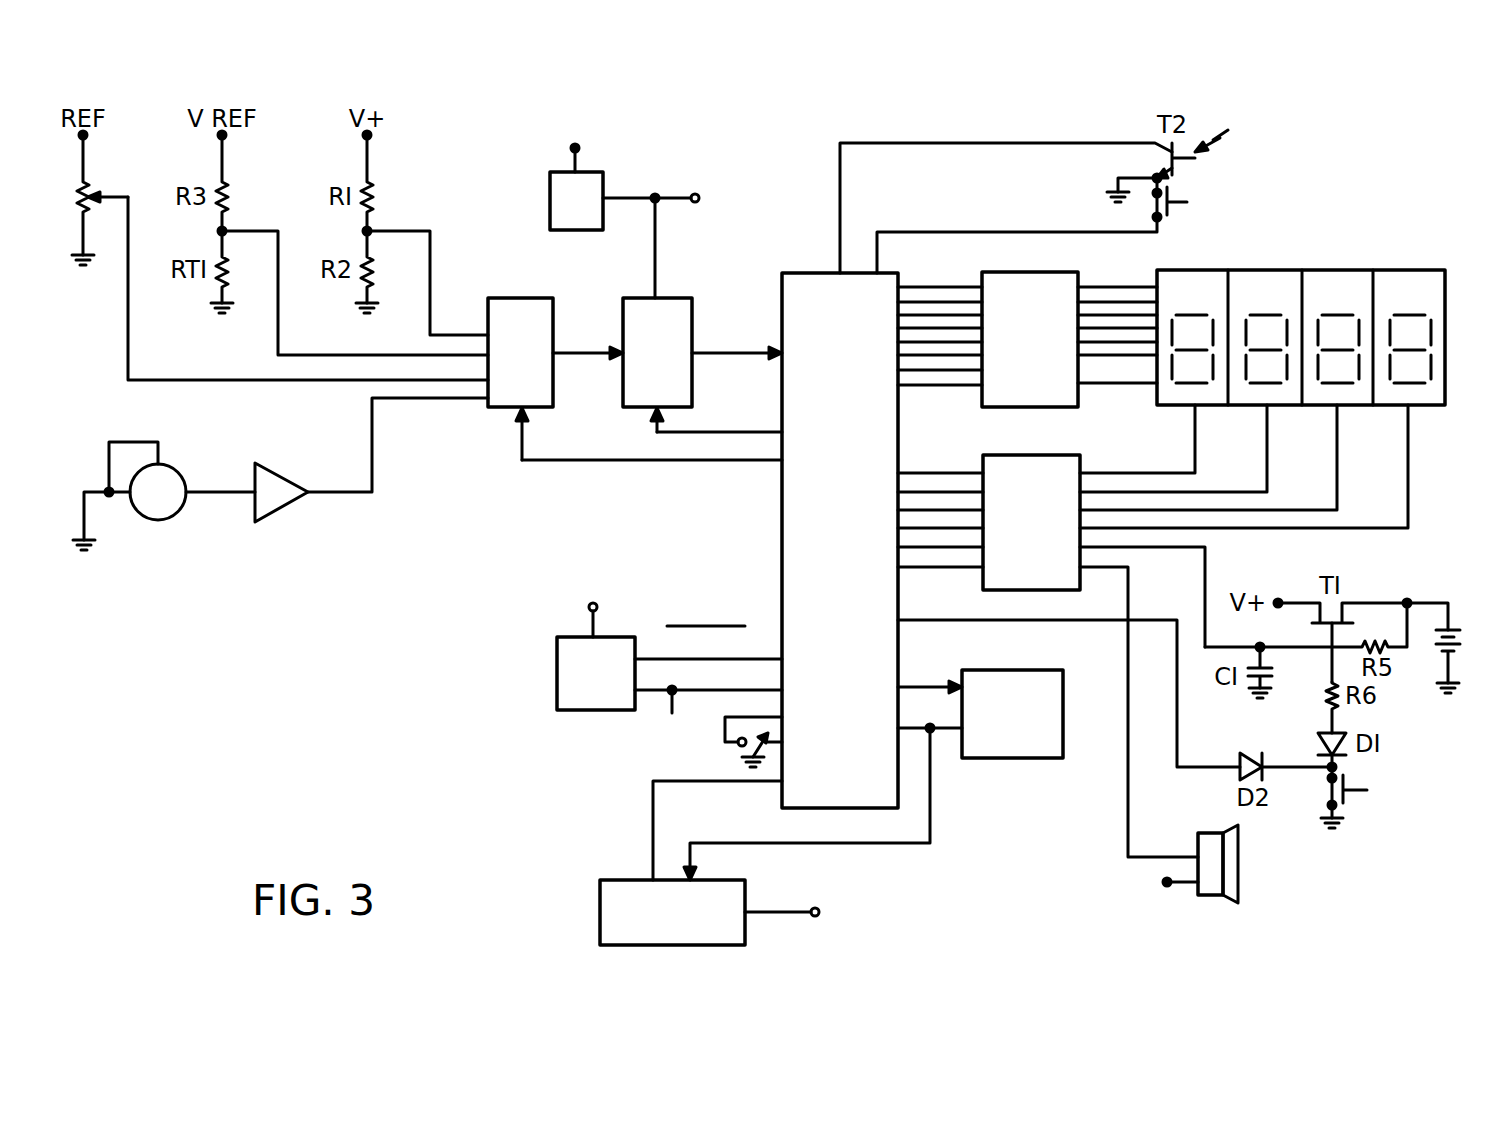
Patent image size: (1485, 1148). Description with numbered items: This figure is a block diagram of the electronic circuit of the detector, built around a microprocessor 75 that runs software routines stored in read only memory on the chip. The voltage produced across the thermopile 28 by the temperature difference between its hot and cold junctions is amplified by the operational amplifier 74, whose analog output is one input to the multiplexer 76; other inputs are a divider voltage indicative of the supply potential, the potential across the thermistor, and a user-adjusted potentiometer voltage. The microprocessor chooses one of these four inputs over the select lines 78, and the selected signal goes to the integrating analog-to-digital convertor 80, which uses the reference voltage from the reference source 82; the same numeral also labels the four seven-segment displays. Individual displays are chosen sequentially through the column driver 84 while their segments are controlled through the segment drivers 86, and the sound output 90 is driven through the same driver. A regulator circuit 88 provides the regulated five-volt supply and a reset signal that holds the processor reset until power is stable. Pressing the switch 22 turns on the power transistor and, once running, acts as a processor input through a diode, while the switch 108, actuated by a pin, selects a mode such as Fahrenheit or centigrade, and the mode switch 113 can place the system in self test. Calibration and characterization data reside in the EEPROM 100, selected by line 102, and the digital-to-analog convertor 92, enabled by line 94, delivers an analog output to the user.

The switch 22 is at (1362, 797).
The thermopile 28 is at (172, 518).
The operational amplifier 74 is at (283, 506).
The microprocessor 75 is at (782, 513).
The multiplexer 76 is at (490, 410).
The select lines 78 is at (630, 462).
The analog-to-digital convertor 80 is at (697, 298).
The reference source 82 is at (603, 188).
The column driver 84 is at (1070, 455).
The segment drivers 86 is at (1060, 272).
The reset circuit 88 is at (562, 688).
The sound output 90 is at (1243, 887).
The digital-to-analog convertor 92 is at (600, 913).
The select line 94 is at (652, 840).
The EEPROM 100 is at (1020, 760).
The select line 102 is at (927, 685).
The switch 108 is at (1183, 192).
The mode switch 113 is at (747, 750).